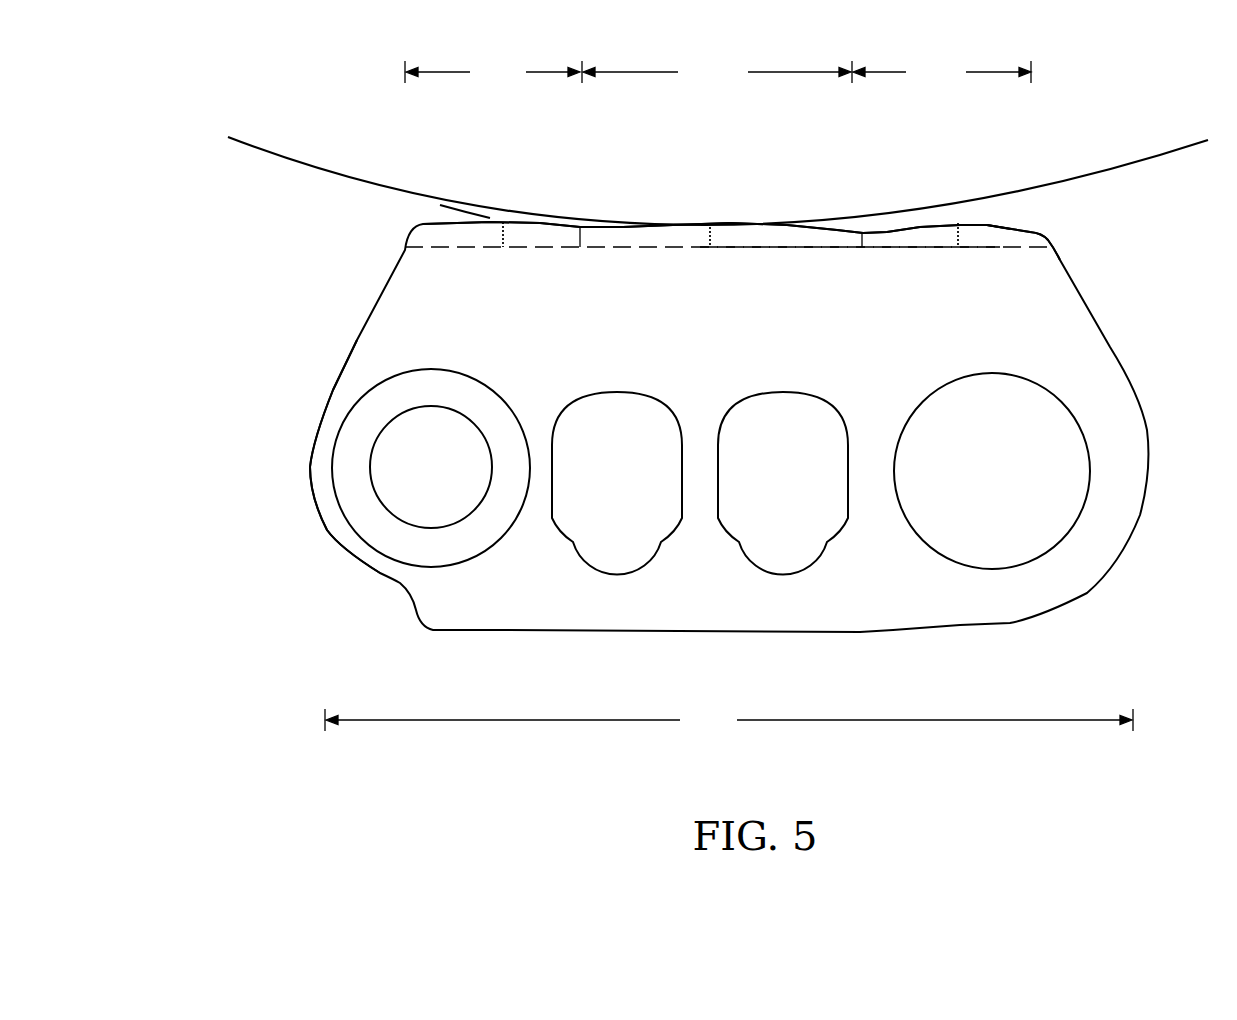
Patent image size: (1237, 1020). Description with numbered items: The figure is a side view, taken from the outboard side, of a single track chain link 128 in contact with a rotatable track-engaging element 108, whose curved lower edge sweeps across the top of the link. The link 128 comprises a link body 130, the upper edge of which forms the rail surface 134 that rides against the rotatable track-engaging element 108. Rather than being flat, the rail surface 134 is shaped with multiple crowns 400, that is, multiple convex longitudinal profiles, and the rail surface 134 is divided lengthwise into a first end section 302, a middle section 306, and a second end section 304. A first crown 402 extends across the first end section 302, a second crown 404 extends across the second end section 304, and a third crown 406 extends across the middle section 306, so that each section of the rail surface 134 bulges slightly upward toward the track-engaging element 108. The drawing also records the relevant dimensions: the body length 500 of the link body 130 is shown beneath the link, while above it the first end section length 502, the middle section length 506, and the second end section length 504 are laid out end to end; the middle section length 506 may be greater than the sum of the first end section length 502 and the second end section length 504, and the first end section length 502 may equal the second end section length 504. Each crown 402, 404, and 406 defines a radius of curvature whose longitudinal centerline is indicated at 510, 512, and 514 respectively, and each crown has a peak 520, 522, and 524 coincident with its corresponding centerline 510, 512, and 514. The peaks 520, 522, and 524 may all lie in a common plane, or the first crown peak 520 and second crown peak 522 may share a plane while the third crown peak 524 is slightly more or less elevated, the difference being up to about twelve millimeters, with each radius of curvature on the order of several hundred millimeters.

The rotatable track-engaging element 108 is at (308, 168).
The link 128 is at (393, 310).
The link body 130 is at (325, 402).
The rail surface 134 is at (1040, 214).
The first end section 302 is at (478, 205).
The second end section 304 is at (980, 206).
The middle section 306 is at (671, 251).
The multiple crowns 400 is at (828, 261).
The first crown 402 is at (453, 240).
The second crown 404 is at (902, 240).
The third crown 406 is at (638, 240).
The body length 500 is at (729, 721).
The first end section length 502 is at (493, 72).
The second end section length 504 is at (942, 72).
The middle section length 506 is at (717, 72).
The longitudinal centerline of first crown radius of curvature 510 is at (503, 234).
The longitudinal centerline of second crown radius of curvature 512 is at (958, 234).
The longitudinal centerline of third crown radius of curvature 514 is at (710, 234).
The first crown peak 520 is at (500, 208).
The second crown peak 522 is at (953, 211).
The third crown peak 524 is at (706, 211).